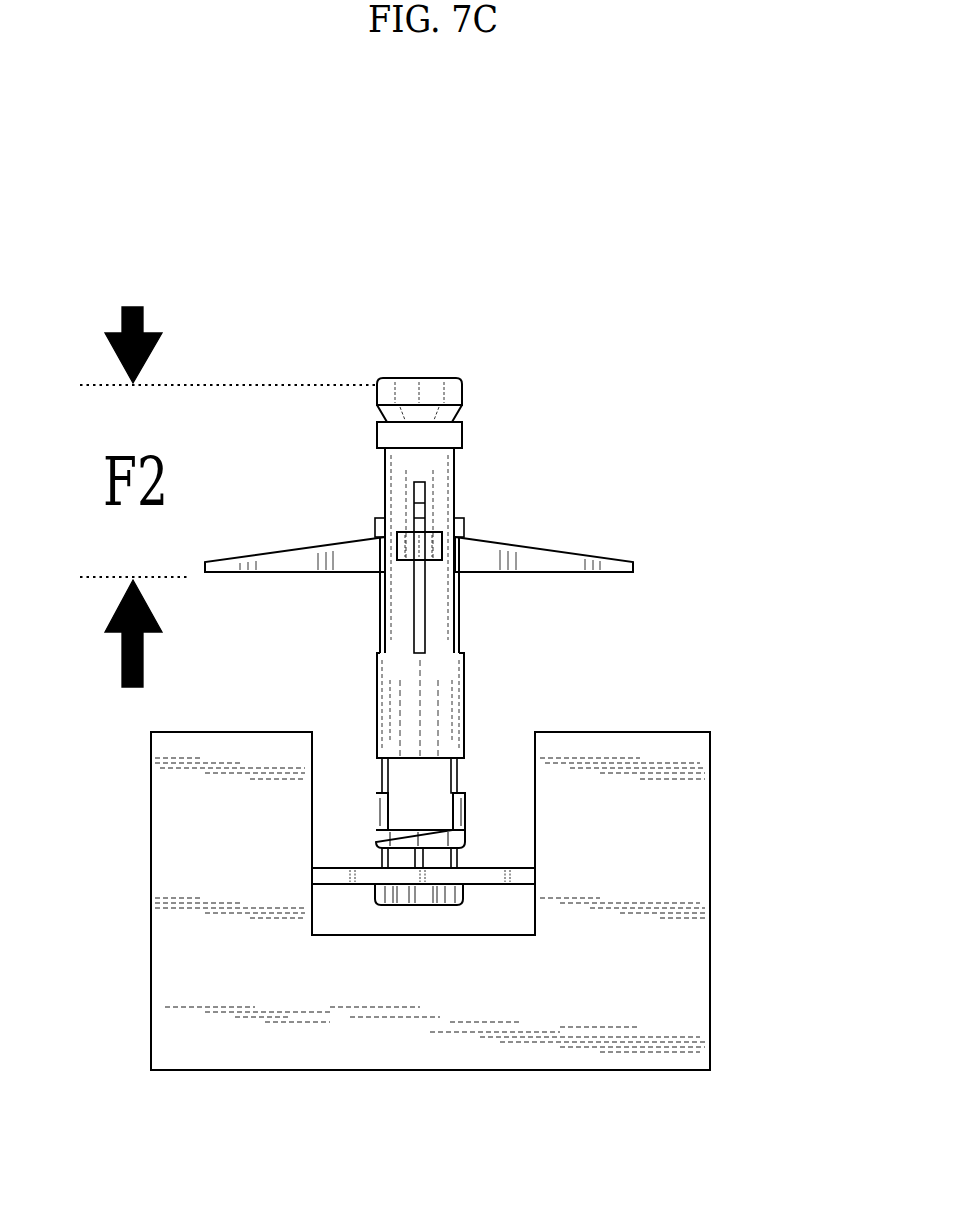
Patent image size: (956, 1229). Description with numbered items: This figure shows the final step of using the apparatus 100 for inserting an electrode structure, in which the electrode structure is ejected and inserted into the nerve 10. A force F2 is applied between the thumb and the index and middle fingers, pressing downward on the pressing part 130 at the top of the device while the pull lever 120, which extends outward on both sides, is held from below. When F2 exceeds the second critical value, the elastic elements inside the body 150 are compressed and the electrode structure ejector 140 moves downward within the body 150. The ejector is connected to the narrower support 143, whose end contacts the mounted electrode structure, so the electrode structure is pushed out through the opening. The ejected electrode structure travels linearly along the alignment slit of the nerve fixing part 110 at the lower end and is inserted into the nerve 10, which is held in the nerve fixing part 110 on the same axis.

The apparatus for inserting an electrode structure 100 is at (706, 262).
The pressing part 130 is at (462, 394).
The pull lever 120 is at (268, 560).
The body 150 is at (456, 665).
The electrode structure ejector 140 is at (378, 795).
The support 143 is at (421, 855).
The nerve fixing part 110 is at (387, 905).
The nerve 10 is at (498, 884).